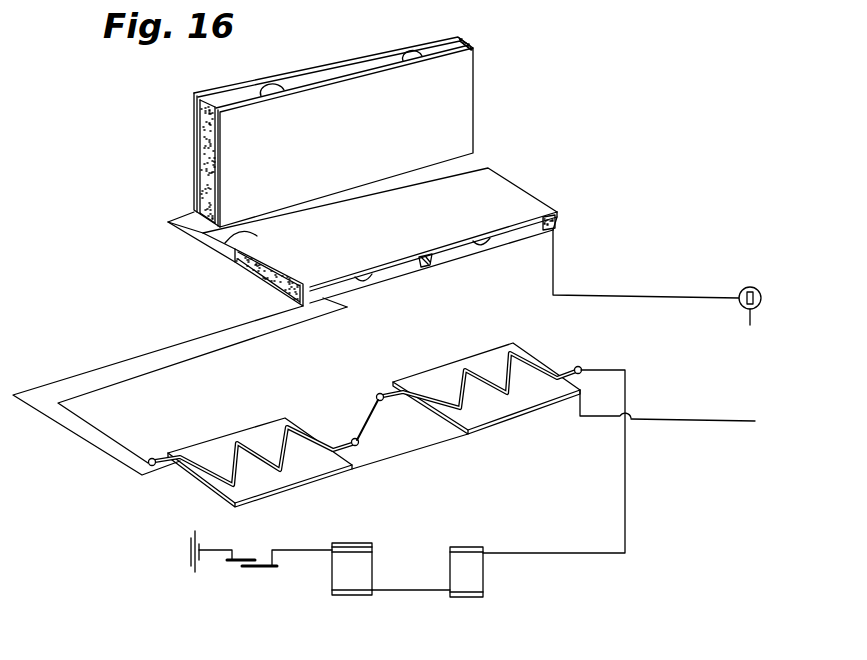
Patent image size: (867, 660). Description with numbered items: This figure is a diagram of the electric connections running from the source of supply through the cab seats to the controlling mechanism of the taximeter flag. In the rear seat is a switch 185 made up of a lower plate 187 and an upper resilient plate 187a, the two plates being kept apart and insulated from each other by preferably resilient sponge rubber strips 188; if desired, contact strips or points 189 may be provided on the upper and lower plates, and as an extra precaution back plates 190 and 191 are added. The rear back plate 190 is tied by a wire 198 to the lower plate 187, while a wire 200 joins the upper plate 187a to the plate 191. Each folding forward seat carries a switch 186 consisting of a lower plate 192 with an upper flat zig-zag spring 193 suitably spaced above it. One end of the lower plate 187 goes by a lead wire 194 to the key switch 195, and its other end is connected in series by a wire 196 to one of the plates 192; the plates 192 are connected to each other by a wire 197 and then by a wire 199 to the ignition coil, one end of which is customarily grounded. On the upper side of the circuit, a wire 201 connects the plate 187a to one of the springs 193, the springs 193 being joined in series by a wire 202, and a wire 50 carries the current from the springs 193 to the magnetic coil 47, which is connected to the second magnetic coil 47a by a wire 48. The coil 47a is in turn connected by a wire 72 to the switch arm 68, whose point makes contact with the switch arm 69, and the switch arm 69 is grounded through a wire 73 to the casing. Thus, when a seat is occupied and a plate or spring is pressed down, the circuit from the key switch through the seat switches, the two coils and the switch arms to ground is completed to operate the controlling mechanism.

The back plate 190 is at (192, 128).
The back plate 191 is at (467, 85).
The switch 185 is at (401, 230).
The lower plate 187 is at (399, 279).
The upper resilient plate 187a is at (503, 190).
The sponge rubber strips 188 is at (268, 279).
The contact strips or points 189 is at (363, 283).
The lead wire 194 is at (648, 295).
The key switch 195 is at (768, 283).
The wire 196 is at (70, 377).
The wire 198 is at (195, 238).
The wire 200 is at (265, 240).
The wire 201 is at (110, 437).
The wire 202 is at (368, 421).
The upper flat zig-zag spring 193 is at (233, 447).
The switches 186 is at (365, 402).
The lower plate 192 is at (313, 477).
The wire 197 is at (420, 446).
The wire 199 is at (655, 424).
The wire 50 is at (628, 508).
The magnetic coil 47 is at (487, 577).
The magnetic coil 47a is at (328, 582).
The wire 48 is at (404, 590).
The wire 72 is at (304, 552).
The wire 73 is at (209, 553).
The switch arm 69 is at (236, 563).
The switch arm 68 is at (262, 569).